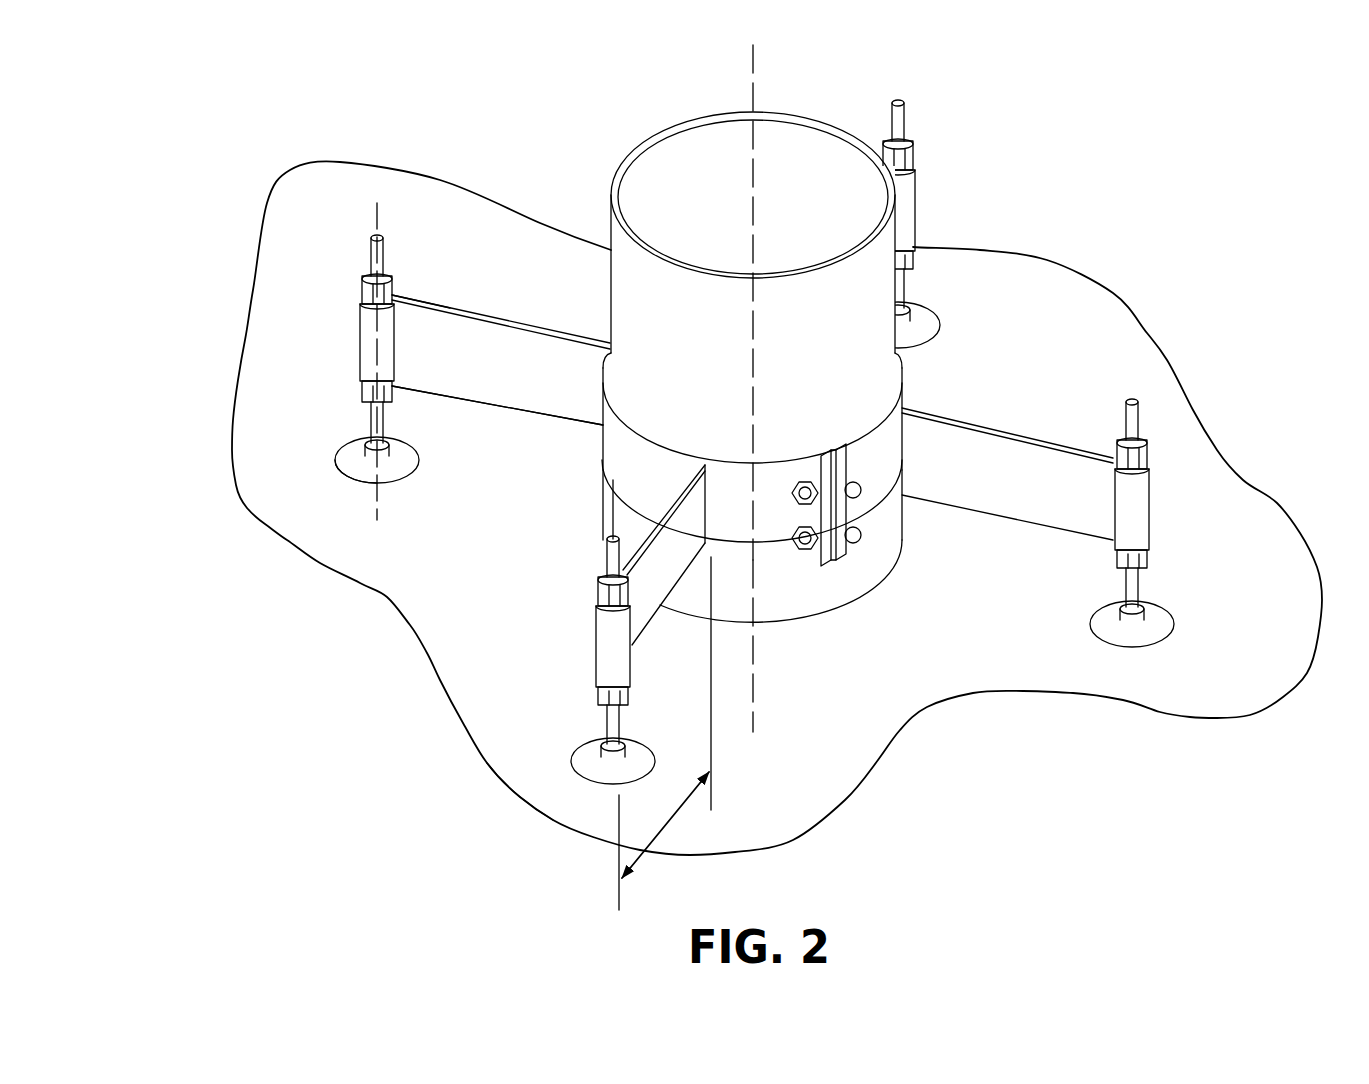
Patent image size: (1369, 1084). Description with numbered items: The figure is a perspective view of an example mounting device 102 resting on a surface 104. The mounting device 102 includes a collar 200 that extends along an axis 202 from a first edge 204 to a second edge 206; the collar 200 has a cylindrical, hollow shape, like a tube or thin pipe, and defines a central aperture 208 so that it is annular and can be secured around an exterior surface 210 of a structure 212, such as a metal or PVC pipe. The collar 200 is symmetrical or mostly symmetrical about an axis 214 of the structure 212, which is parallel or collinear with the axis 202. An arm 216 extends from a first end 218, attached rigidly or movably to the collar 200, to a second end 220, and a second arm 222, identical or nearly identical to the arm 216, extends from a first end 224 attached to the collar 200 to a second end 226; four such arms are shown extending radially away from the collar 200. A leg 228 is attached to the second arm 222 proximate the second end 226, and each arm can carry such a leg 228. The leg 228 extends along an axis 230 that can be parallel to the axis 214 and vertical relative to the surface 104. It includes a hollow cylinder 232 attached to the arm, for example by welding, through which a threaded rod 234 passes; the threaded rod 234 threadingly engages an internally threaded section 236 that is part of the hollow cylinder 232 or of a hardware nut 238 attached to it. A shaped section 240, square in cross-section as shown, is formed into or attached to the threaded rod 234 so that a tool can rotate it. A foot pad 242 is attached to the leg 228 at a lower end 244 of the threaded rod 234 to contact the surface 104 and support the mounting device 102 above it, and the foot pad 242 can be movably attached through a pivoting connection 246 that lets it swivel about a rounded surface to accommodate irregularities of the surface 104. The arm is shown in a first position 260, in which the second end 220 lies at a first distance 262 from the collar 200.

The mounting device 102 is at (679, 477).
The surface 104 is at (1223, 697).
The collar 200 is at (880, 507).
The axis 202 is at (758, 78).
The first edge 204 is at (501, 339).
The second edge 206 is at (597, 492).
The central aperture 208 is at (642, 402).
The exterior surface 210 is at (668, 207).
The structure 212 is at (655, 137).
The axis 214 is at (755, 697).
The arm 216 is at (977, 420).
The first end 218 is at (927, 390).
The second end 220 is at (1102, 422).
The second arm 222 is at (458, 392).
The first end 224 is at (600, 330).
The second end 226 is at (415, 283).
The leg 228 is at (394, 460).
The axis 230 is at (373, 218).
The hollow cylinder 232 is at (360, 343).
The threaded rod 234 is at (371, 417).
The internally threaded section 236 is at (362, 390).
The hardware nut 238 is at (360, 288).
The shaped section 240 is at (373, 240).
The foot pad 242 is at (365, 482).
The lower end 244 is at (309, 466).
The pivoting connection 246 is at (367, 447).
The first position 260 is at (505, 726).
The first distance 262 is at (675, 825).